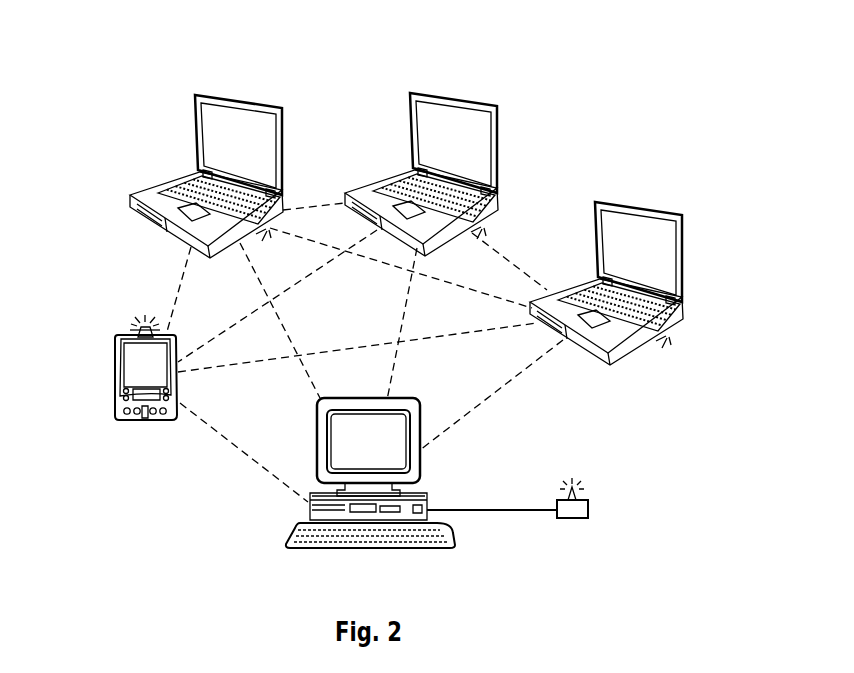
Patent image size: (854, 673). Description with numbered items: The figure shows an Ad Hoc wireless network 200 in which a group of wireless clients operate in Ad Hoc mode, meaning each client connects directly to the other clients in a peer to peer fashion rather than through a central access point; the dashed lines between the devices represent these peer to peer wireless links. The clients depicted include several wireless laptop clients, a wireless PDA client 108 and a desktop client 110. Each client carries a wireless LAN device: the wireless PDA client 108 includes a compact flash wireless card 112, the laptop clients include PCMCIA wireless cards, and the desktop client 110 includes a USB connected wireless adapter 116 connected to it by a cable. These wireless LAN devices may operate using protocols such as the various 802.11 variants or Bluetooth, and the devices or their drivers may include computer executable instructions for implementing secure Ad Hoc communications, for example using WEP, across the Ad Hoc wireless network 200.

The wireless PDA client 108 is at (115, 368).
The desktop client 110 is at (372, 548).
The compact flash wireless card 112 is at (142, 323).
The USB connected wireless adapter 116 is at (572, 518).
The Ad Hoc wireless network 200 is at (624, 93).